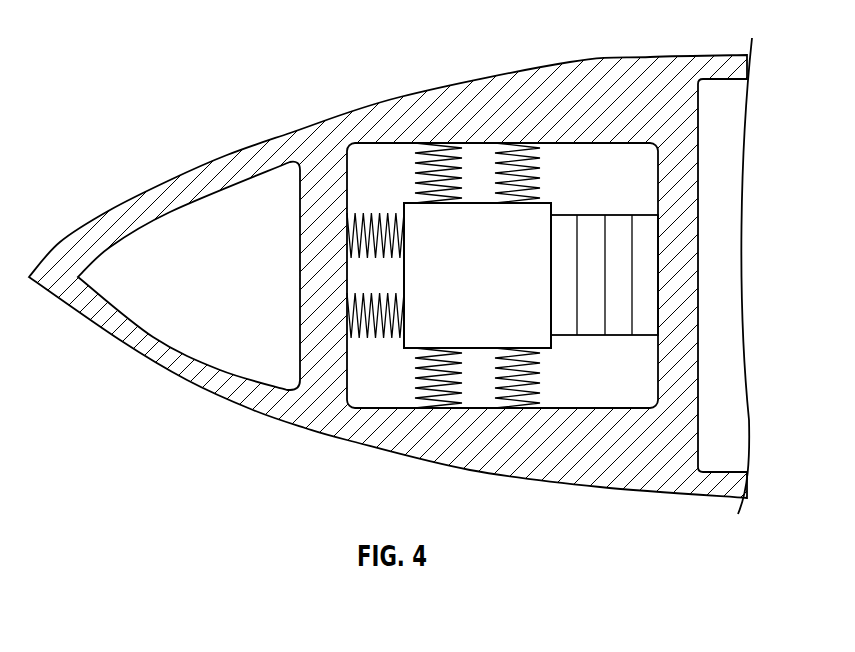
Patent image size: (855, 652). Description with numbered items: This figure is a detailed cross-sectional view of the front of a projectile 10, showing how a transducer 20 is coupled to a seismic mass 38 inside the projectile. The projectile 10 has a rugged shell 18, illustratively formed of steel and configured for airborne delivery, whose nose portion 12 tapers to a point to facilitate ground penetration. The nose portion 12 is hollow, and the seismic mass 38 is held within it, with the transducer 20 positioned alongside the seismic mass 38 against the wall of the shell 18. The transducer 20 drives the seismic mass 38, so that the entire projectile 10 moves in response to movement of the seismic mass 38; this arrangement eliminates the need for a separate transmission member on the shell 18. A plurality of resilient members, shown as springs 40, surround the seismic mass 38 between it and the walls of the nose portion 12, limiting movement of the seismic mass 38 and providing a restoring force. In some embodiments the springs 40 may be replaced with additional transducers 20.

The projectile 10 is at (427, 265).
The nose portion 12 is at (322, 133).
The shell 18 is at (673, 72).
The transducer 20 is at (587, 232).
The seismic mass 38 is at (468, 218).
The springs 40 is at (373, 217).